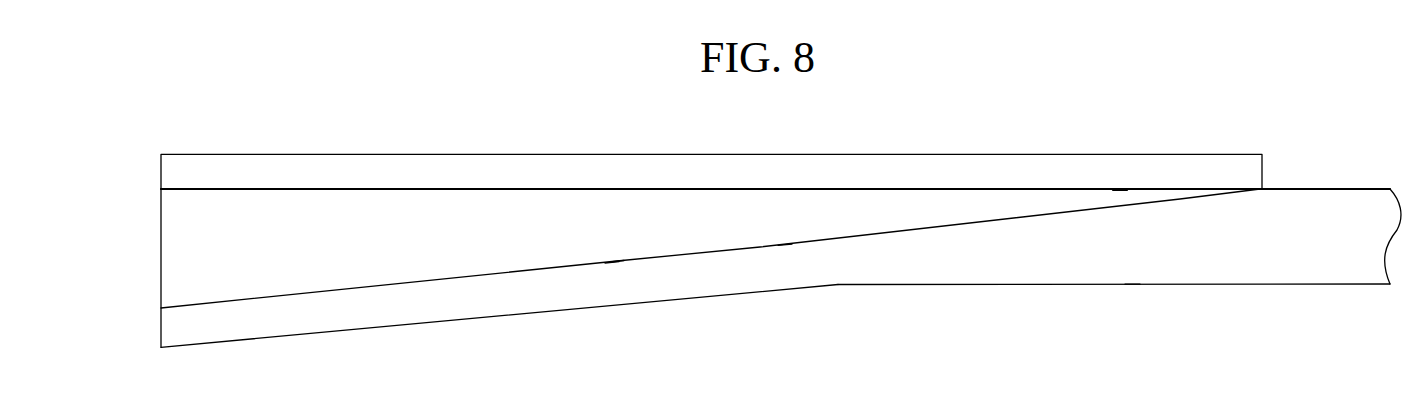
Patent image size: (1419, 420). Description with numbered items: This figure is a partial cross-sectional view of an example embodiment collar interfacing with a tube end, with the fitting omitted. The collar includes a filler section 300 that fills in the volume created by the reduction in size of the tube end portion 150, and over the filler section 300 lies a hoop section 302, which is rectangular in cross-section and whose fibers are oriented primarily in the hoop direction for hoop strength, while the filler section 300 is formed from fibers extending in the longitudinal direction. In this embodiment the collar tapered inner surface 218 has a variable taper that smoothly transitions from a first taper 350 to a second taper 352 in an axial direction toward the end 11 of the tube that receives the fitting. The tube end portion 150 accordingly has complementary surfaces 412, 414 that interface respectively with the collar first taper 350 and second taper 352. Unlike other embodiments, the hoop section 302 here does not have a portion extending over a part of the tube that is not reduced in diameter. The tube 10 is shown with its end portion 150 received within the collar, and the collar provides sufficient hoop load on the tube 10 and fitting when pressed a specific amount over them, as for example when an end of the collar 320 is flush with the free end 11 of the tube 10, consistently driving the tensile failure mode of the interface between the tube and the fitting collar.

The hoop section 302 is at (347, 172).
The end of the collar 320 is at (160, 195).
The filler section 300 is at (210, 233).
The end of the tube 11 is at (160, 327).
The substrate 10 is at (667, 280).
The second taper 352 is at (617, 261).
The complementary surface 414 is at (612, 262).
The tube end portion 150 is at (722, 319).
The collar tapered inner surface 218 is at (786, 247).
The first taper 350 is at (1123, 240).
The complementary surface 412 is at (1123, 240).